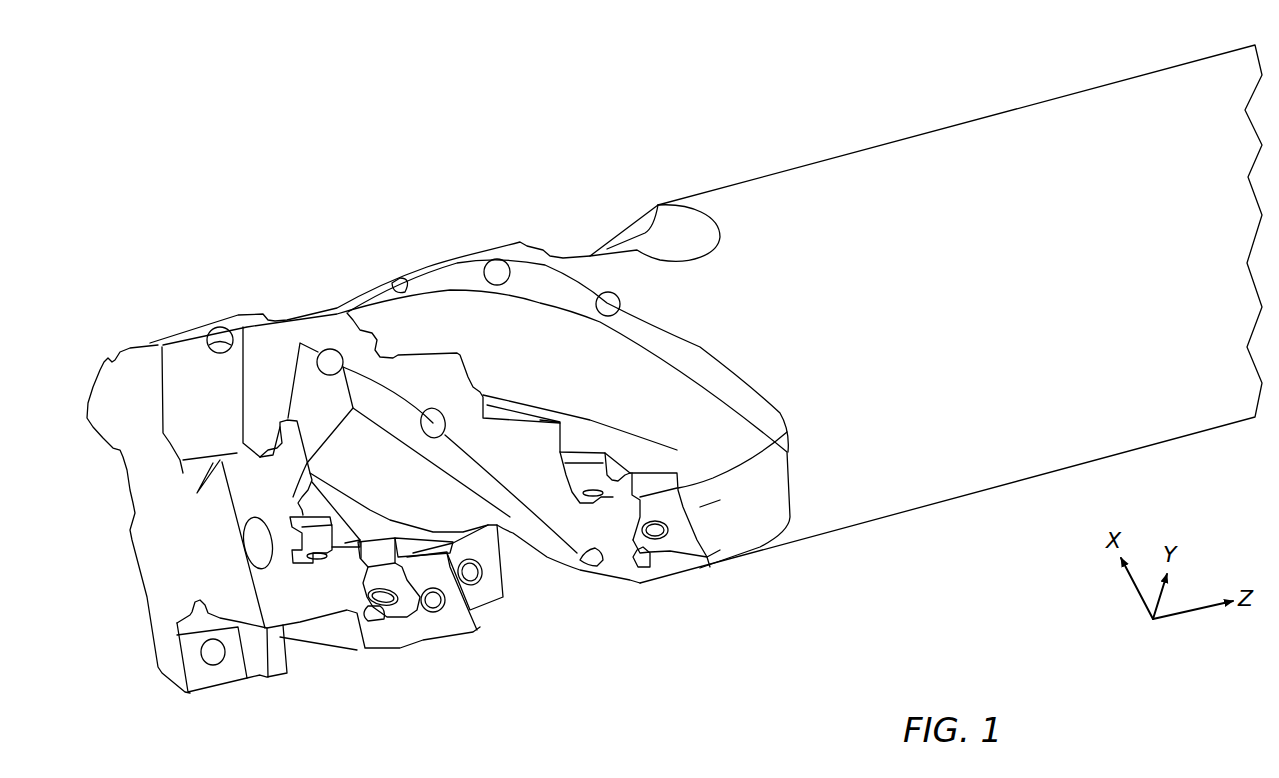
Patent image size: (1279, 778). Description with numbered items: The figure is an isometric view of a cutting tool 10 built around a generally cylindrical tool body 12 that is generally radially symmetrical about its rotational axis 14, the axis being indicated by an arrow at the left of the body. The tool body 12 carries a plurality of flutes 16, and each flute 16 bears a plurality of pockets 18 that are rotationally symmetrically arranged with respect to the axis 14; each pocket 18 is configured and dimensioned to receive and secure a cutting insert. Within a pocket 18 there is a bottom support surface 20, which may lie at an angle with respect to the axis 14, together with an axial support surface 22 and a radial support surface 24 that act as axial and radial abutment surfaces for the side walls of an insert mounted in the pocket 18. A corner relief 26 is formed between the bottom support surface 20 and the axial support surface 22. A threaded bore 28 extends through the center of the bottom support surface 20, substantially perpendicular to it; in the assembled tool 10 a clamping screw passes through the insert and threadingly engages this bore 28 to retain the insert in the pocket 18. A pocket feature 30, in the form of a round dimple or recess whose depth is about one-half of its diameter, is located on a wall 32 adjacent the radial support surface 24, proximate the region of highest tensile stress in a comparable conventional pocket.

The cutting tool 10 is at (241, 102).
The tool body 12 is at (1035, 132).
The rotational axis 14 is at (160, 528).
The flutes 16 is at (502, 337).
The pocket 18 is at (702, 520).
The bottom support surface 20 is at (650, 497).
The axial support surface 22 is at (652, 516).
The radial support surface 24 is at (675, 487).
The corner relief 26 is at (638, 562).
The threaded bore 28 is at (676, 538).
The pocket feature 30 is at (615, 478).
The wall 32 is at (628, 462).